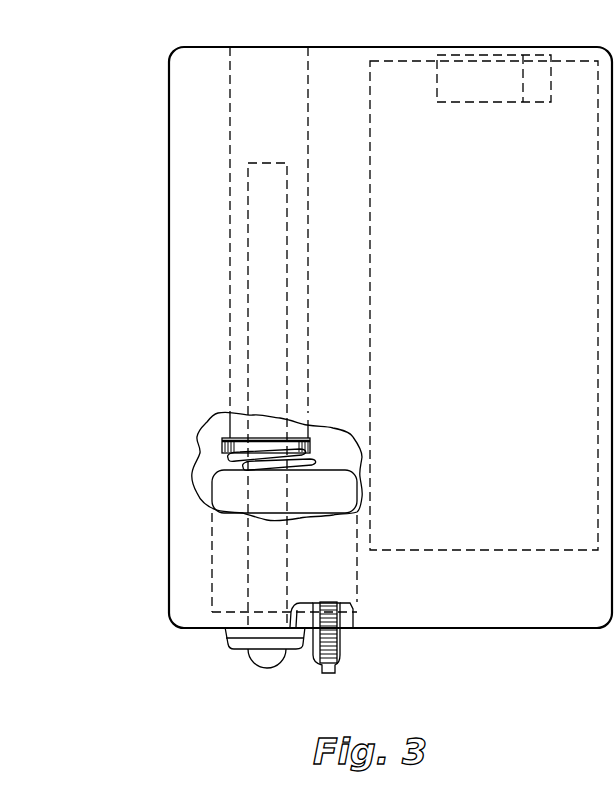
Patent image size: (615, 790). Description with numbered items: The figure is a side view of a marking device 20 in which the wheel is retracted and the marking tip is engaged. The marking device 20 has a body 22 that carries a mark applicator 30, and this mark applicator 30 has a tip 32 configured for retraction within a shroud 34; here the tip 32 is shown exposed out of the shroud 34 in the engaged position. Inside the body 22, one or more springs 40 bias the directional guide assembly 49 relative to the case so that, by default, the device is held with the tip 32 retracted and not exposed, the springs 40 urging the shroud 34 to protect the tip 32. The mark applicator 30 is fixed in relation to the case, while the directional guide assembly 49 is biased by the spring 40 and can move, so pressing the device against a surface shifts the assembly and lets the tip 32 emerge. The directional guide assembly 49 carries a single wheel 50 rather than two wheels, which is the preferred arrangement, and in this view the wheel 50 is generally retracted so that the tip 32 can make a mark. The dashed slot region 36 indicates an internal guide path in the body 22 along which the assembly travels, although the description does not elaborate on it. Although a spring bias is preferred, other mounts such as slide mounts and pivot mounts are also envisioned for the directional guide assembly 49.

The marking device 20 is at (319, 337).
The body 22 is at (182, 592).
The mark applicator 30 is at (218, 669).
The tip 32 is at (270, 663).
The shroud 34 is at (243, 642).
The slot 36 is at (270, 297).
The spring 40 is at (228, 460).
The directional guide assembly 49 is at (360, 659).
The wheel 50 is at (338, 650).